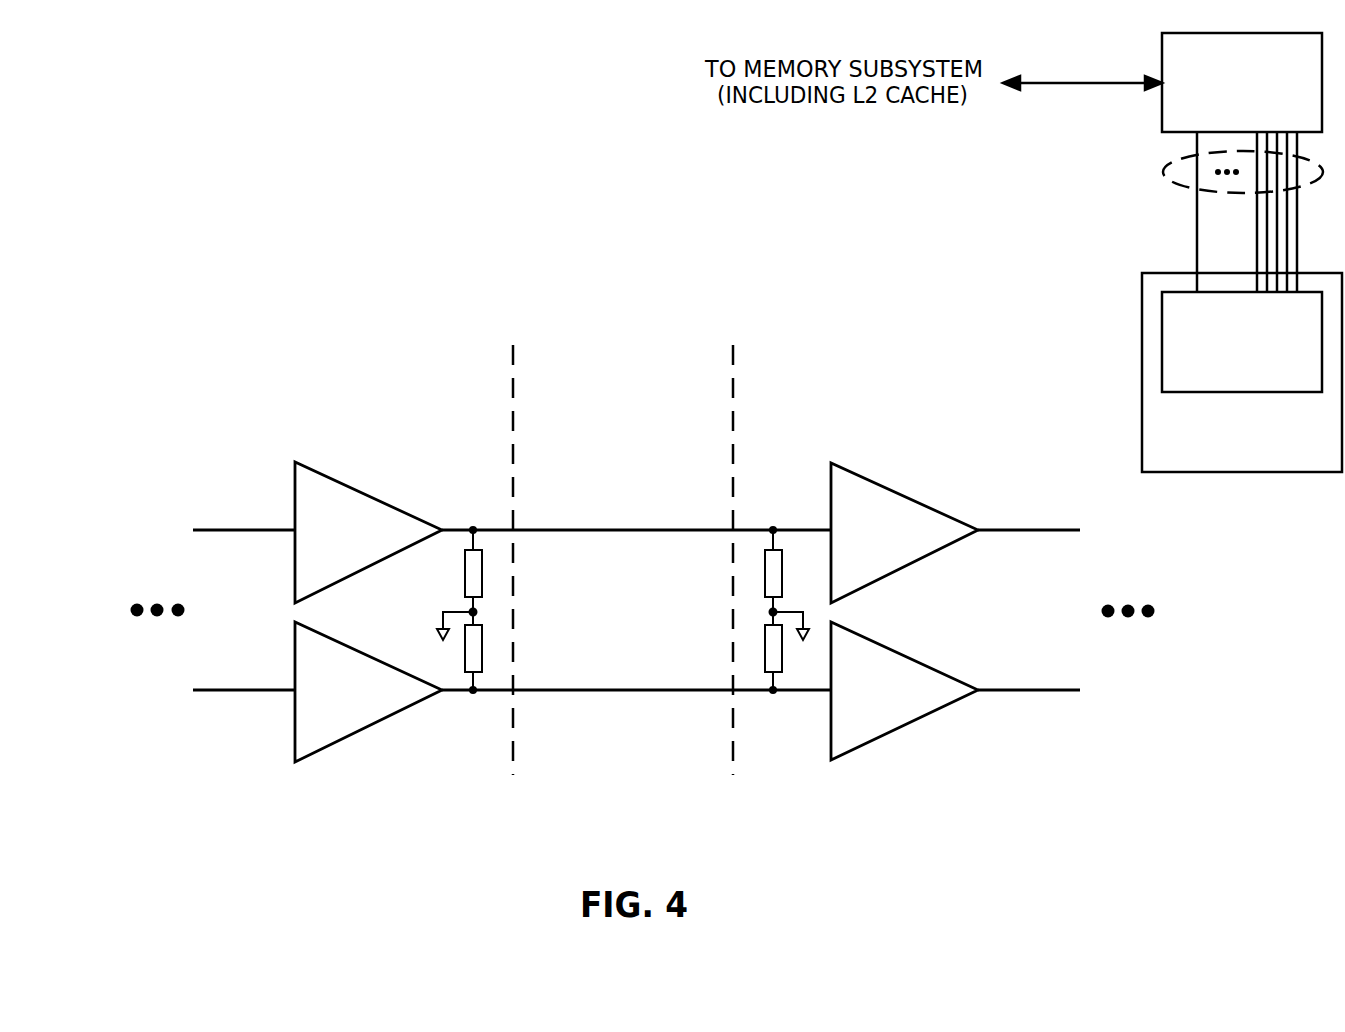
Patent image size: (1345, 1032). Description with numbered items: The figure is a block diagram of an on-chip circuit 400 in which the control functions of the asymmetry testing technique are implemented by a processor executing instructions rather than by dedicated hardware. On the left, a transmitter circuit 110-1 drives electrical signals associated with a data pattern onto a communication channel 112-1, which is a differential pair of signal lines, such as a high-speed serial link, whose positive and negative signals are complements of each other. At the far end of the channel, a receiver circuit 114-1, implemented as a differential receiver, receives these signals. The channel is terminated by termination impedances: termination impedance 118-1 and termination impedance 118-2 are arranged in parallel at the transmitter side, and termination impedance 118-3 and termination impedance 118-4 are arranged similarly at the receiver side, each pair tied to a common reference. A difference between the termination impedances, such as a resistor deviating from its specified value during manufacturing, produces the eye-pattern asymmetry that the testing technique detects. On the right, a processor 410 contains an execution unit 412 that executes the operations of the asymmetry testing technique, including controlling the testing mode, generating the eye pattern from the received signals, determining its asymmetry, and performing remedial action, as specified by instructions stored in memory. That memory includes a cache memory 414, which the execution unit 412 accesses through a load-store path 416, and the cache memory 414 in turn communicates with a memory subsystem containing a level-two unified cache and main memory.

The on-chip circuit 400 is at (317, 163).
The transmitter circuit 110-1 is at (353, 522).
The communication channel 112-1 is at (733, 341).
The receiver circuit 114-1 is at (890, 682).
The termination impedance 118-1 is at (482, 577).
The termination impedance 118-2 is at (483, 649).
The termination impedance 118-3 is at (783, 573).
The termination impedance 118-4 is at (782, 643).
The processor 410 is at (1260, 460).
The execution unit 412 is at (1260, 378).
The cache memory 414 is at (1260, 106).
The load-store path 416 is at (1172, 158).